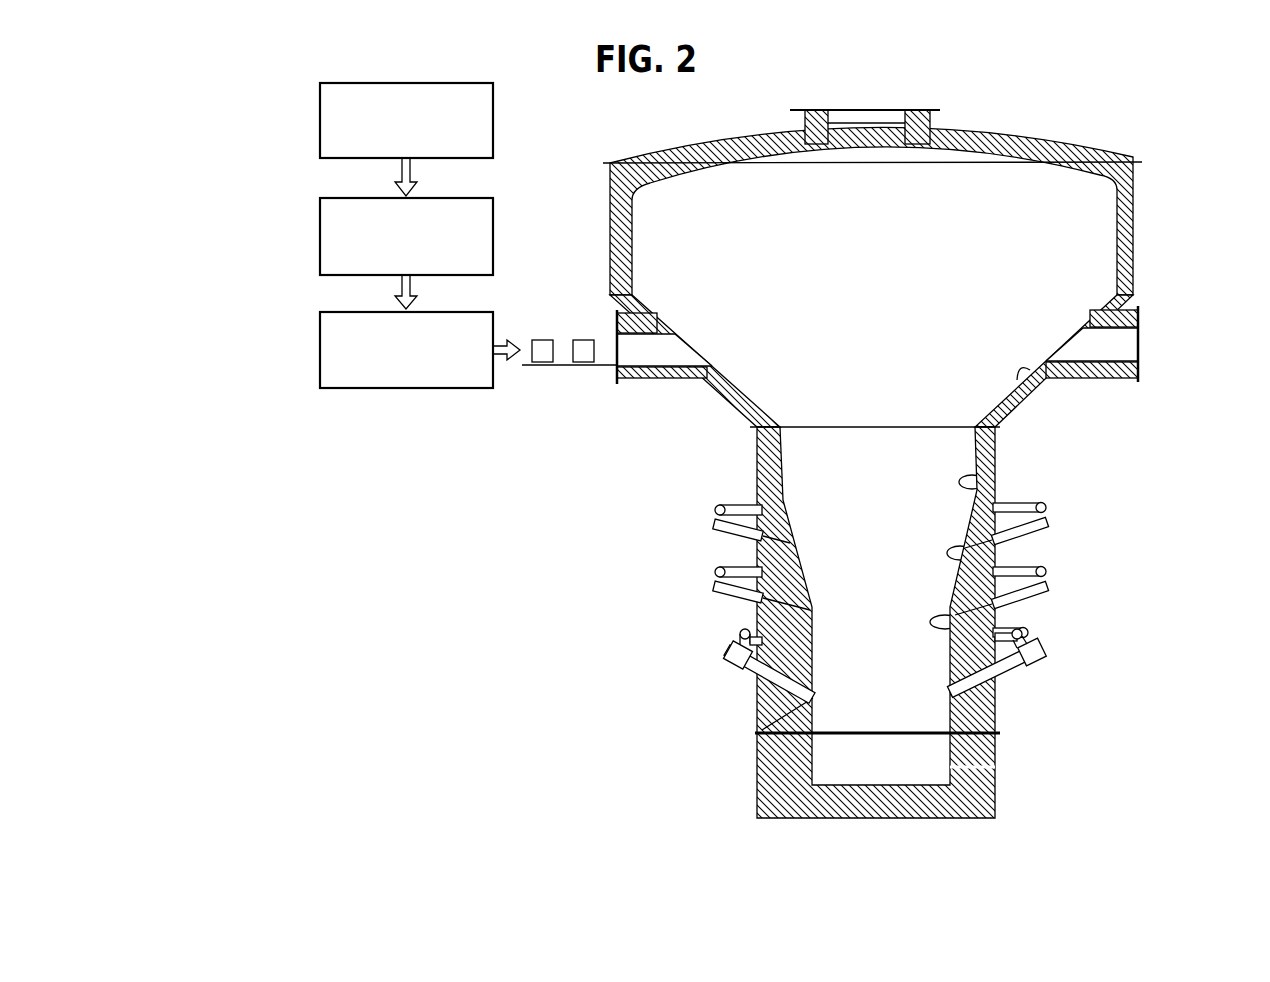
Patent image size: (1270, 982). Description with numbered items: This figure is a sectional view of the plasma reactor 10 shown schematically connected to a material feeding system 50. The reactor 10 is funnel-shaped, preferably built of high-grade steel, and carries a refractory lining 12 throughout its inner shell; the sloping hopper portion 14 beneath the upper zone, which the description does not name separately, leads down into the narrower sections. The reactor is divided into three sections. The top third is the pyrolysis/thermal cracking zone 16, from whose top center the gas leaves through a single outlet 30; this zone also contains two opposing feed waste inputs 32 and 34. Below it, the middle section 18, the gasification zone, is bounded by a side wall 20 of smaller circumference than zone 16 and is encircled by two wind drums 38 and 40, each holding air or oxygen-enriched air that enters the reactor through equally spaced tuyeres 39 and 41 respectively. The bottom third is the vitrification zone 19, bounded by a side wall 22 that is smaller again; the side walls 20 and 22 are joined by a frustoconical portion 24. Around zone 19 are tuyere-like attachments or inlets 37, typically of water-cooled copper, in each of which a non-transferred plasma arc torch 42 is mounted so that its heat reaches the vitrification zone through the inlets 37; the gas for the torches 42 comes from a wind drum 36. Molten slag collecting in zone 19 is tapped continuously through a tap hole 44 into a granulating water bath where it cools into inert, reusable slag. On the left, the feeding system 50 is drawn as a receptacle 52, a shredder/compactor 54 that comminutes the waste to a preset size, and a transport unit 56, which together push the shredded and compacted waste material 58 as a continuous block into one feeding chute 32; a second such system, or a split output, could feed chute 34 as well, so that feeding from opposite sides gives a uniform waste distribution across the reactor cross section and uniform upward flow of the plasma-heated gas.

The reactor 10 is at (1013, 130).
The refractory lining 12 is at (992, 453).
The conical hopper section 14 is at (1043, 383).
The pyrolysis/thermal cracking zone 16 is at (745, 200).
The middle section 18 is at (843, 470).
The vitrification zone 19 is at (900, 640).
The side wall 20 is at (992, 475).
The side wall 22 is at (993, 605).
The frustoconical portion 24 is at (995, 553).
The outlet 30 is at (866, 112).
The feed waste input 32 is at (648, 357).
The feed waste input 34 is at (1130, 347).
The wind drum 36 is at (740, 665).
The tuyere-like attachments or inlets 37 is at (762, 732).
The wind drum 38 is at (717, 572).
The tuyeres 39 is at (762, 615).
The wind drum 40 is at (715, 510).
The tuyeres 41 is at (762, 548).
The non-transferred plasma arc torch 42 is at (725, 650).
The tap hole 44 is at (995, 768).
The material feeding system 50 is at (268, 175).
The receptacle 52 is at (320, 92).
The shredder/compactor 54 is at (320, 207).
The transport unit 56 is at (320, 323).
The shredded and compacted waste material 58 is at (582, 340).